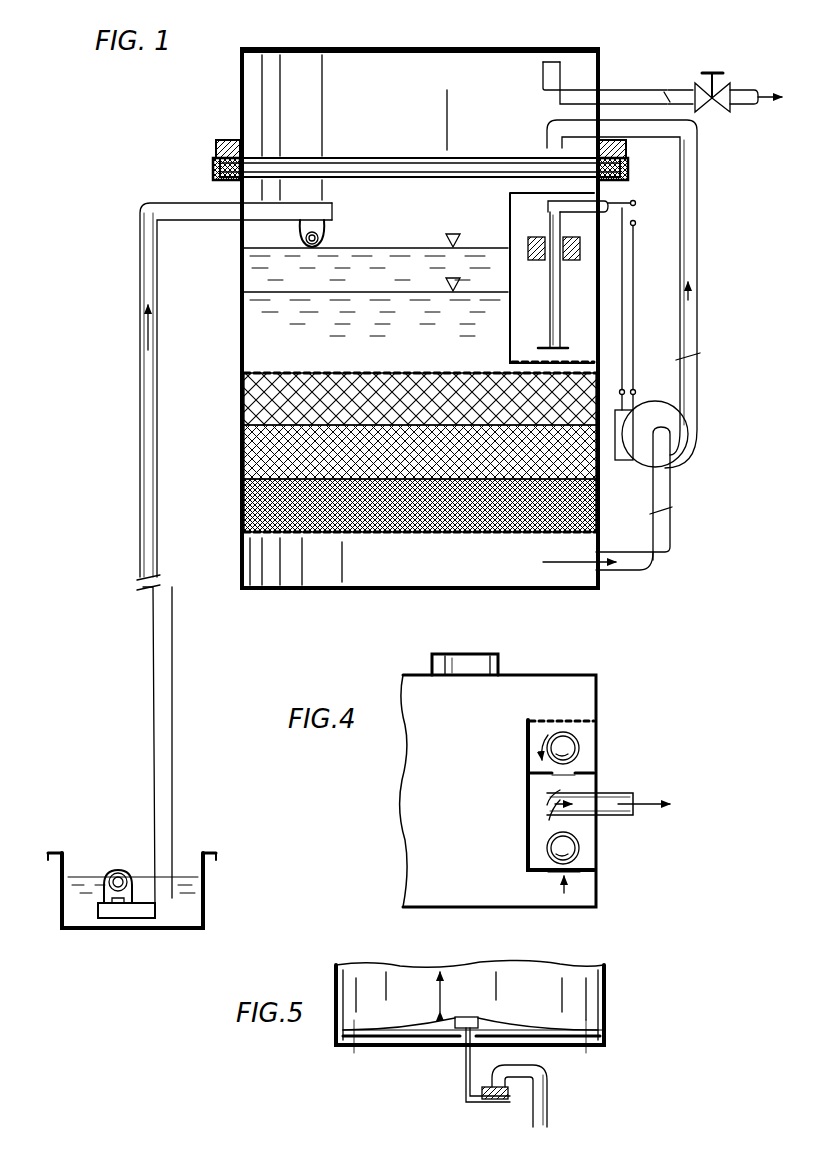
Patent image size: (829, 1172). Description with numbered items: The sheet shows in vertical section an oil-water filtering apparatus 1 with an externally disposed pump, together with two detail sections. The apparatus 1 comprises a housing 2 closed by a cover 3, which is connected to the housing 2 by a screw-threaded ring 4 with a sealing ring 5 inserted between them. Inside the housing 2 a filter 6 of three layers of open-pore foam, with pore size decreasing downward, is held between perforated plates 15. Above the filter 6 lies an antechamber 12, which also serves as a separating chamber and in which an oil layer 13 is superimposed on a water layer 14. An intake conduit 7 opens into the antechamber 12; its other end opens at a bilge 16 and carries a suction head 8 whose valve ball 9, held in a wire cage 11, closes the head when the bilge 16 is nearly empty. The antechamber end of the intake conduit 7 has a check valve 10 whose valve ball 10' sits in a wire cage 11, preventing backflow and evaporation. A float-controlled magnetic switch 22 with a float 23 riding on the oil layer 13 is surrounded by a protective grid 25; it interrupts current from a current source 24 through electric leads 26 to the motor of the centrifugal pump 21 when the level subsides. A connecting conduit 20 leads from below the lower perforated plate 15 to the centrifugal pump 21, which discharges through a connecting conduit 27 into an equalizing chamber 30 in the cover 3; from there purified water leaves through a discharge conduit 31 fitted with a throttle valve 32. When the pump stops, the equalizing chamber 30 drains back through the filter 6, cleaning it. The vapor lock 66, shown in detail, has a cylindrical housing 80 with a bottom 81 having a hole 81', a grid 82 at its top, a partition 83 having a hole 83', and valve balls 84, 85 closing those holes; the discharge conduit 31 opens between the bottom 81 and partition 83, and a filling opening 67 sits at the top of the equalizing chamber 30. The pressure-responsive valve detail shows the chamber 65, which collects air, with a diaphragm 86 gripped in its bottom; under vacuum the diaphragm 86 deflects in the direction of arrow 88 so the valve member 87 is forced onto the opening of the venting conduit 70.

In FIG. 1, the apparatus 1 is at (168, 156).
In FIG. 1, the housing 2 is at (240, 303).
In FIG. 1, the cover 3 is at (240, 85).
In FIG. 1, the screw-threaded ring 4 is at (232, 144).
In FIG. 1, the sealing ring 5 is at (214, 166).
In FIG. 1, the filter 6 is at (266, 452).
In FIG. 1, the intake conduit 7 is at (150, 412).
In FIG. 1, the suction head 8 is at (120, 920).
In FIG. 1, the valve ball 9 is at (110, 872).
In FIG. 1, the check valve 10 is at (262, 233).
In FIG. 1, the valve ball 10' is at (294, 263).
In FIG. 1, the wire cage 11 is at (320, 240).
In FIG. 1, the antechamber 12 is at (416, 225).
In FIG. 1, the oil layer 13 is at (426, 283).
In FIG. 1, the water layer 14 is at (426, 349).
In FIG. 1, the perforated plates 15 is at (256, 372).
In FIG. 1, the bilge 16 is at (203, 884).
In FIG. 1, the connecting conduit 20 is at (672, 543).
In FIG. 1, the centrifugal pump 21 is at (670, 426).
In FIG. 1, the float-controlled magnetic switch 22 is at (572, 270).
In FIG. 1, the float 23 is at (582, 245).
In FIG. 1, the current source 24 is at (637, 210).
In FIG. 1, the grid 25 is at (508, 235).
In FIG. 1, the electric leads 26 is at (624, 345).
In FIG. 1, the connecting conduit 27 is at (700, 278).
In FIG. 1, the equalizing chamber 30 is at (416, 121).
In FIG. 1, the discharge conduit 31 is at (640, 96).
In FIG. 4, the discharge conduit 31 is at (632, 792).
In FIG. 1, the throttle valve 32 is at (698, 88).
In FIG. 5, the chamber 65 is at (606, 984).
In FIG. 4, the vapor lock 66 is at (470, 804).
In FIG. 4, the filling opening 67 is at (495, 661).
In FIG. 5, the venting conduit 70 is at (548, 1104).
In FIG. 4, the cylindrical housing 80 is at (528, 826).
In FIG. 4, the bottom 81 is at (535, 885).
In FIG. 4, the hole 81' is at (608, 887).
In FIG. 4, the grid 82 is at (548, 720).
In FIG. 4, the partition 83 is at (535, 777).
In FIG. 4, the hole 83' is at (608, 760).
In FIG. 4, the valve ball 84 is at (580, 848).
In FIG. 4, the valve ball 85 is at (580, 748).
In FIG. 5, the diaphragm 86 is at (508, 1026).
In FIG. 5, the valve member 87 is at (496, 1100).
In FIG. 5, the arrow 88 is at (421, 992).